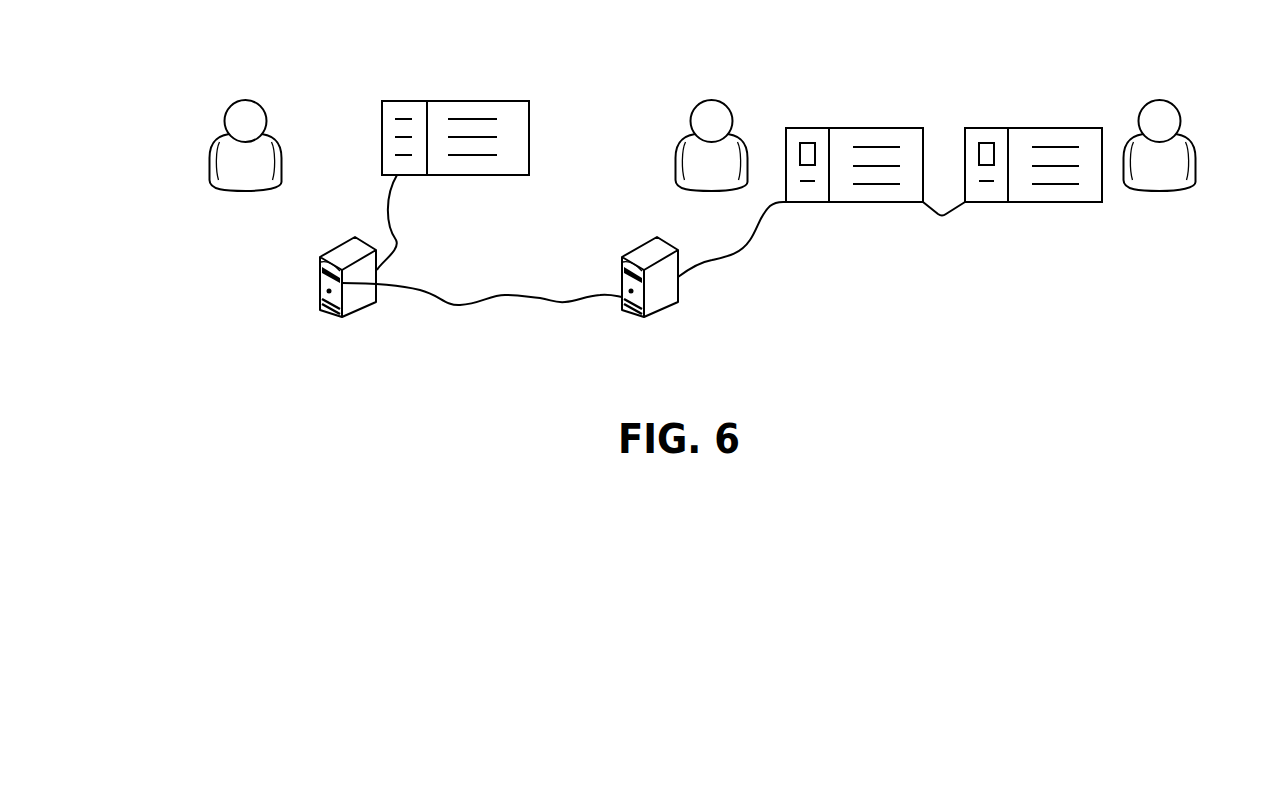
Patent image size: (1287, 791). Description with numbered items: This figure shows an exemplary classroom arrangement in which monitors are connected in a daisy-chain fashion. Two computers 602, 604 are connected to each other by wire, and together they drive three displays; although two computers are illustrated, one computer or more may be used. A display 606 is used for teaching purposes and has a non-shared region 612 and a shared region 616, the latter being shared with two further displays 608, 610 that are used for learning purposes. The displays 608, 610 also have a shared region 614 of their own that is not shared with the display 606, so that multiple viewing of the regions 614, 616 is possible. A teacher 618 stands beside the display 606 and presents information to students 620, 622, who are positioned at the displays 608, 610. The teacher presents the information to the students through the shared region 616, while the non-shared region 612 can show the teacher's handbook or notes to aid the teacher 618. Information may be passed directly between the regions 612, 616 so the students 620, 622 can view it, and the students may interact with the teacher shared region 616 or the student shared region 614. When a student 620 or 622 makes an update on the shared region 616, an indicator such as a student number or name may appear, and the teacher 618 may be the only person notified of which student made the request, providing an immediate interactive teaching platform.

The computer 602 is at (358, 312).
The computer 604 is at (662, 312).
The display 606 is at (390, 101).
The display 608 is at (800, 128).
The display 610 is at (980, 128).
The non-shared region 612 is at (403, 108).
The shared region 614 is at (813, 132).
The shared region 616 is at (495, 108).
The teacher 618 is at (223, 137).
The student 620 is at (683, 133).
The student 622 is at (1187, 138).